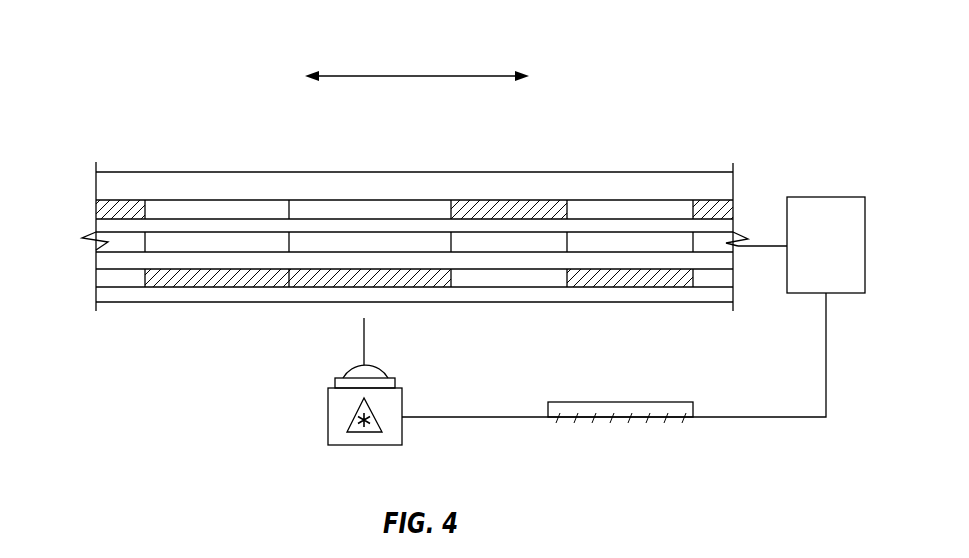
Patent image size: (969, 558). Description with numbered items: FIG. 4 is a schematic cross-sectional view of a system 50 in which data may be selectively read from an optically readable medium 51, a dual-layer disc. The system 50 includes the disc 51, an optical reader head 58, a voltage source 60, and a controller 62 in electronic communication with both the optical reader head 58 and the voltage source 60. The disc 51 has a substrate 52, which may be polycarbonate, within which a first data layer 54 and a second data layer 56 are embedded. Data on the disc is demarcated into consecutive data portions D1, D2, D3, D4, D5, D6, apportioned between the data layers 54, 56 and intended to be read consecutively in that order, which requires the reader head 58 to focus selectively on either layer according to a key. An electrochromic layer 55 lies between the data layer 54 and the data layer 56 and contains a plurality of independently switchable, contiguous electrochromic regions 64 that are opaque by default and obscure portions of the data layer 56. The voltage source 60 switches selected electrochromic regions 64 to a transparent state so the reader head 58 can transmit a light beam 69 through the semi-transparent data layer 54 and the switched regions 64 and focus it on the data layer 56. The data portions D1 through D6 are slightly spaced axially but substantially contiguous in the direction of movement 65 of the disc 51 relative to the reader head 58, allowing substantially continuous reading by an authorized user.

The system 50 is at (146, 42).
The optically readable medium 51 is at (502, 172).
The substrate 52 is at (355, 183).
The first data layer 54 is at (86, 276).
The electrochromic layer 55 is at (86, 240).
The second data layer 56 is at (86, 207).
The optical reader head 58 is at (402, 405).
The voltage source 60 is at (826, 197).
The controller 62 is at (622, 402).
The electrochromic regions 64 is at (352, 243).
The direction of movement 65 is at (418, 76).
The light beam 69 is at (363, 342).
The data portion D1 is at (113, 205).
The data portion D2 is at (178, 284).
The data portion D3 is at (422, 287).
The data portion D4 is at (555, 199).
The data portion D5 is at (640, 287).
The data portion D6 is at (722, 200).